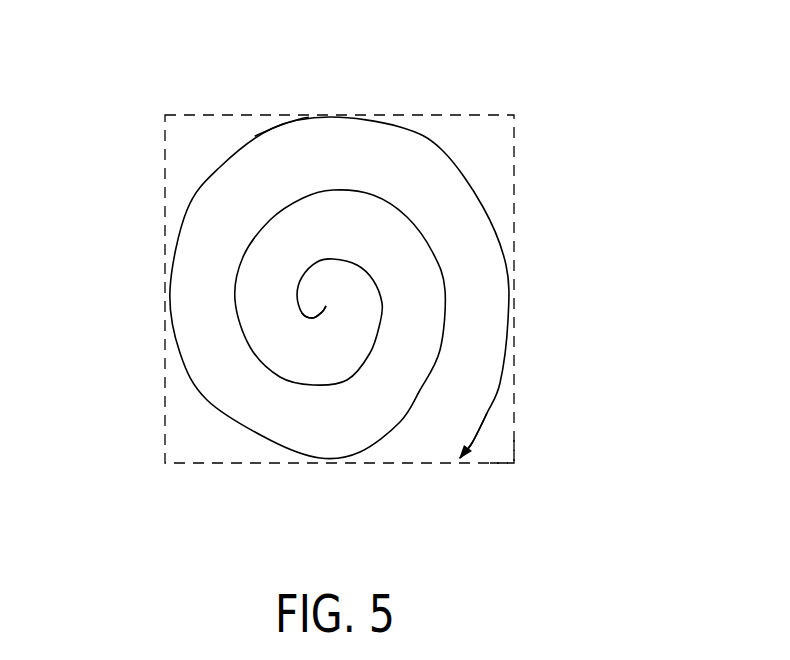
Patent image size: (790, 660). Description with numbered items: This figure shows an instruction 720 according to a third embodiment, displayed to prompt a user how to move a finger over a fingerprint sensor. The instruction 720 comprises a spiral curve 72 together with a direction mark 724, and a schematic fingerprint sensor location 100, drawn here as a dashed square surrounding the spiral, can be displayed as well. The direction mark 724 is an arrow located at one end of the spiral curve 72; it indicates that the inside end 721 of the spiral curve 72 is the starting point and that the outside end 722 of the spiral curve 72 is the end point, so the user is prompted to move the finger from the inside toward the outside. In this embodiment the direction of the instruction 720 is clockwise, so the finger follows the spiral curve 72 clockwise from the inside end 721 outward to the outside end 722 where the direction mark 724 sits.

The schematic fingerprint sensor location 100 is at (163, 207).
The spiral curve 72 is at (442, 150).
The instruction 720 is at (262, 121).
The inside end 721 is at (326, 304).
The outside end 722 is at (472, 443).
The direction mark 724 is at (462, 462).